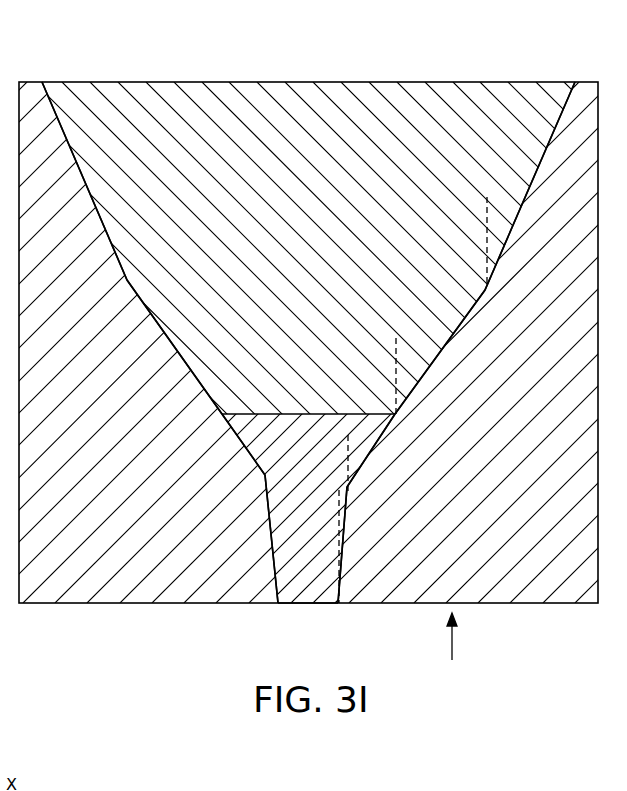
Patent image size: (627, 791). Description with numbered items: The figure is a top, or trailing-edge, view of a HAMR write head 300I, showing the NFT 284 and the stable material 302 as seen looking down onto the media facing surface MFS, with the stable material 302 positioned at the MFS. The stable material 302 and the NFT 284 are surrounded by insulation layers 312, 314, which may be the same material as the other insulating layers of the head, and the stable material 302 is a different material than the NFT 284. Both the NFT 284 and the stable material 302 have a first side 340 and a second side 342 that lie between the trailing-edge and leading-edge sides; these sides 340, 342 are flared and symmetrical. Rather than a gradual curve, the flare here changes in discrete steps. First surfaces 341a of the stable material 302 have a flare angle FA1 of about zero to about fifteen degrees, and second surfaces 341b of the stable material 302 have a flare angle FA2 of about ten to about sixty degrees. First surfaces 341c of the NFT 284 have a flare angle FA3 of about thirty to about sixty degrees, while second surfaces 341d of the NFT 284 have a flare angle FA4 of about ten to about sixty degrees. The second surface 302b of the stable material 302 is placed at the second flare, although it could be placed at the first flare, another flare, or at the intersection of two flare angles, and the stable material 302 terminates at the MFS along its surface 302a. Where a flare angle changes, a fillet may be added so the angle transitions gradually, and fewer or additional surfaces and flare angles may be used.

The HAMR write head 300I is at (184, 51).
The NFT 284 is at (322, 195).
The insulation layer 312 is at (93, 565).
The insulation layer 314 is at (558, 563).
The stable material 302 is at (325, 480).
The second surface of the stable material 302b is at (310, 412).
The main pole bottom surface 302a is at (308, 604).
The first side 340 is at (148, 423).
The second side 342 is at (466, 417).
The first surfaces of the stable material 341a is at (270, 546).
The second surfaces of the stable material 341b is at (242, 443).
The first surfaces of the NFT 341c is at (173, 346).
The second surfaces of the NFT 341d is at (100, 220).
The flare angle FA1 is at (339, 512).
The flare angle FA2 is at (350, 437).
The flare angle FA3 is at (397, 352).
The flare angle FA4 is at (487, 223).
The media facing surface MFS is at (452, 657).